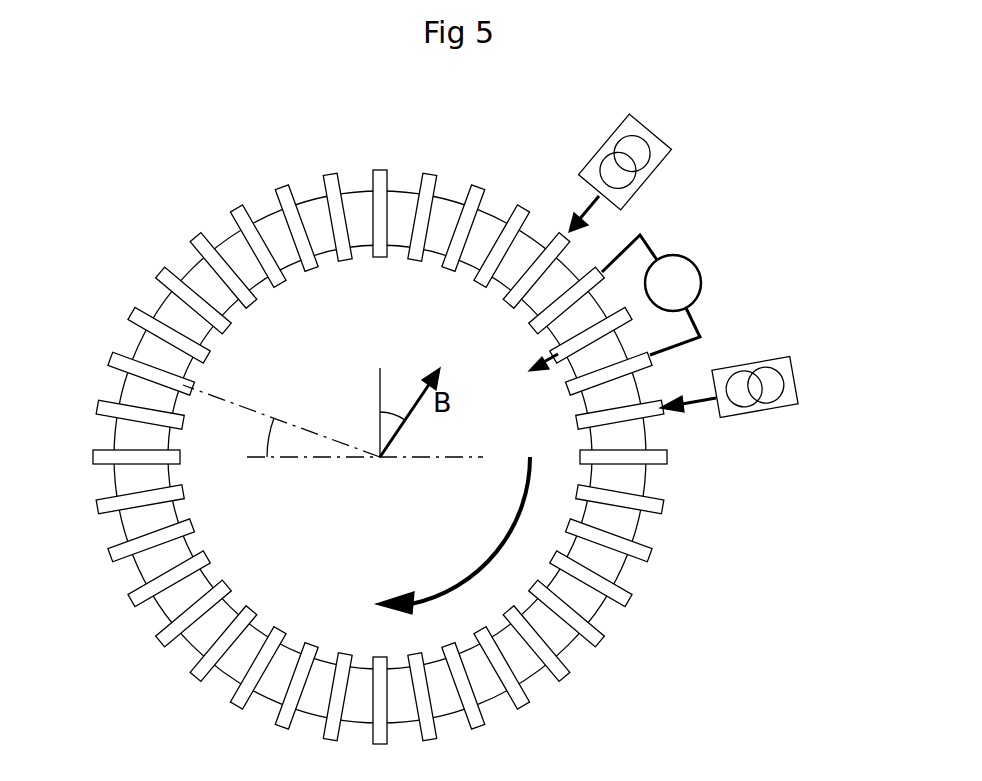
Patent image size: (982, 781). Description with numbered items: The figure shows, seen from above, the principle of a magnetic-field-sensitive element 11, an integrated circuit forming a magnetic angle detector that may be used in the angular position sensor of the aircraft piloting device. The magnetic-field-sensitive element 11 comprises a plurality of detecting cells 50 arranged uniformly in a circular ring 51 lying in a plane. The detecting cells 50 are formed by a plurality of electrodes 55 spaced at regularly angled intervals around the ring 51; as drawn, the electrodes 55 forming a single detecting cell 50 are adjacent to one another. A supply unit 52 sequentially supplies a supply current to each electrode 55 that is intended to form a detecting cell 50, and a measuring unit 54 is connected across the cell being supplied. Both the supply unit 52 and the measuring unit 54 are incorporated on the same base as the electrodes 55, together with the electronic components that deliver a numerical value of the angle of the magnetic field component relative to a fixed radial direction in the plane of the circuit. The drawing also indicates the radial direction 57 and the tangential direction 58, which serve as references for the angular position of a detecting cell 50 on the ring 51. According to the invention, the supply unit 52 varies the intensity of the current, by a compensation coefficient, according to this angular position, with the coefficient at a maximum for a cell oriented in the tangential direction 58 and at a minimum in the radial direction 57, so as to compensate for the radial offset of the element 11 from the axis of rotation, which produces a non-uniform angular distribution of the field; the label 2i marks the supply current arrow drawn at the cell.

The magnetic-field-sensitive element 11 is at (232, 153).
The circular ring 51 is at (311, 203).
The electrodes 55 is at (476, 190).
The radial direction 57 is at (380, 417).
The tangential direction 58 is at (272, 458).
The induced current direction 2i is at (526, 376).
The detecting cells 50 is at (776, 202).
The supply unit 52 is at (636, 142).
The measuring unit 54 is at (702, 257).